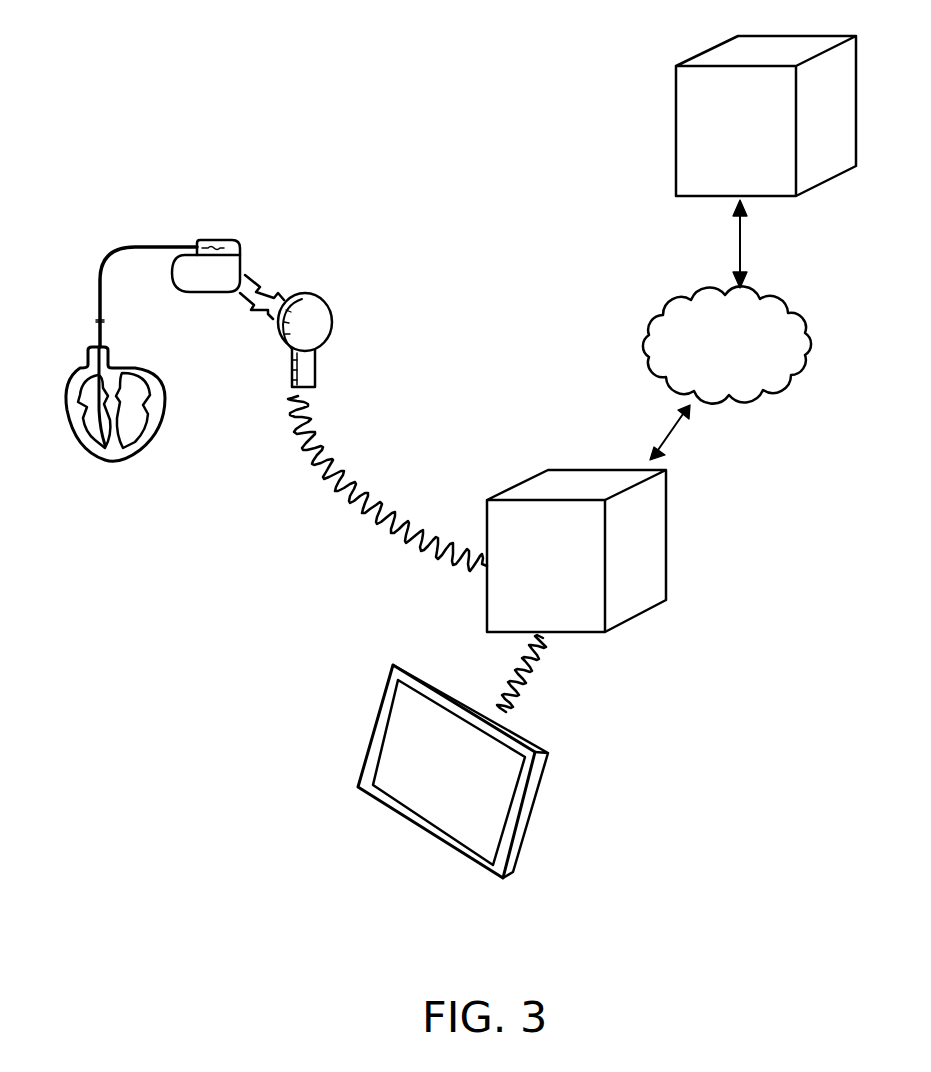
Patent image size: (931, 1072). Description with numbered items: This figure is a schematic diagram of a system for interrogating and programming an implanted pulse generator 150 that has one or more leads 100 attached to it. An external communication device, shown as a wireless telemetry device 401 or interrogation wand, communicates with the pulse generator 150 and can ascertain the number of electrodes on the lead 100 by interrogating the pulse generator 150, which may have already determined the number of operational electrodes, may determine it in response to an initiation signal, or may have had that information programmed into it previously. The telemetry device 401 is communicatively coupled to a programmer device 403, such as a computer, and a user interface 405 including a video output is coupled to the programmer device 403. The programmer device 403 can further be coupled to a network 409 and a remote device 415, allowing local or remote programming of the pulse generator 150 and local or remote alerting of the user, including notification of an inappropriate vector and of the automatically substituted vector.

The lead 100 is at (122, 240).
The pulse generator 150 is at (222, 234).
The wireless telemetry device 401 is at (308, 312).
The programmer device 403 is at (578, 598).
The user interface 405 is at (540, 777).
The network 409 is at (755, 363).
The remote device 415 is at (707, 127).